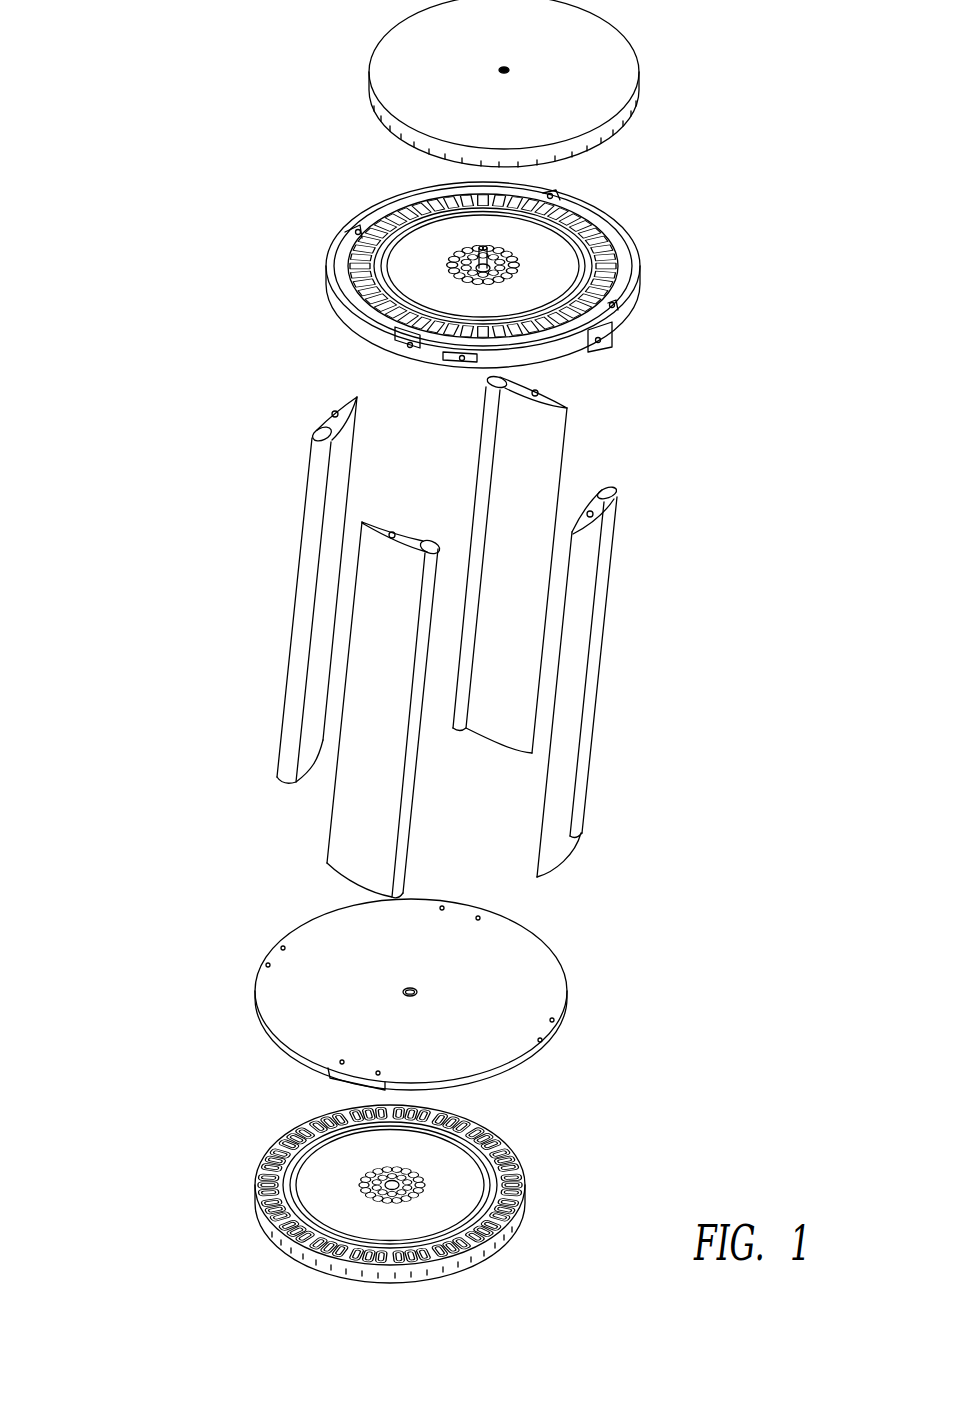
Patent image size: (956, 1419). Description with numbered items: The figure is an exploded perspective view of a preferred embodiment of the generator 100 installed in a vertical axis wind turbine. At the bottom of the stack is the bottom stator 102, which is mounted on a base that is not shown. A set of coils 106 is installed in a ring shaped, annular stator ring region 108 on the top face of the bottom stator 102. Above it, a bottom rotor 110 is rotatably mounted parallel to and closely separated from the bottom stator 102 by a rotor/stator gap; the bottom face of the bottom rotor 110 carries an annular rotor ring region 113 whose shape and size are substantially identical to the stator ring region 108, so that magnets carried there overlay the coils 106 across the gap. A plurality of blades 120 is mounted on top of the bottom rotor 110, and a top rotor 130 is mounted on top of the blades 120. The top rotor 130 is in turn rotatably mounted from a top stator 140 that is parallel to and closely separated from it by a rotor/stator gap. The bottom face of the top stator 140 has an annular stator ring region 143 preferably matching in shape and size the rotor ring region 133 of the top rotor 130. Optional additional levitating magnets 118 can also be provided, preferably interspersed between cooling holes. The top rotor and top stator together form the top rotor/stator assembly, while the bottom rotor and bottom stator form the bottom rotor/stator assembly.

The generator 100 is at (266, 537).
The bottom stator 102 is at (162, 1192).
The set of coils 106 is at (445, 1194).
The stator ring region 108 is at (518, 1222).
The bottom rotor 110 is at (418, 994).
The rotor ring region 113 is at (533, 1062).
The levitating magnets 118 is at (518, 262).
The blades 120 is at (570, 808).
The top rotor 130 is at (478, 275).
The rotor ring region 133 is at (608, 268).
The top stator 140 is at (507, 83).
The stator ring region 143 is at (617, 133).